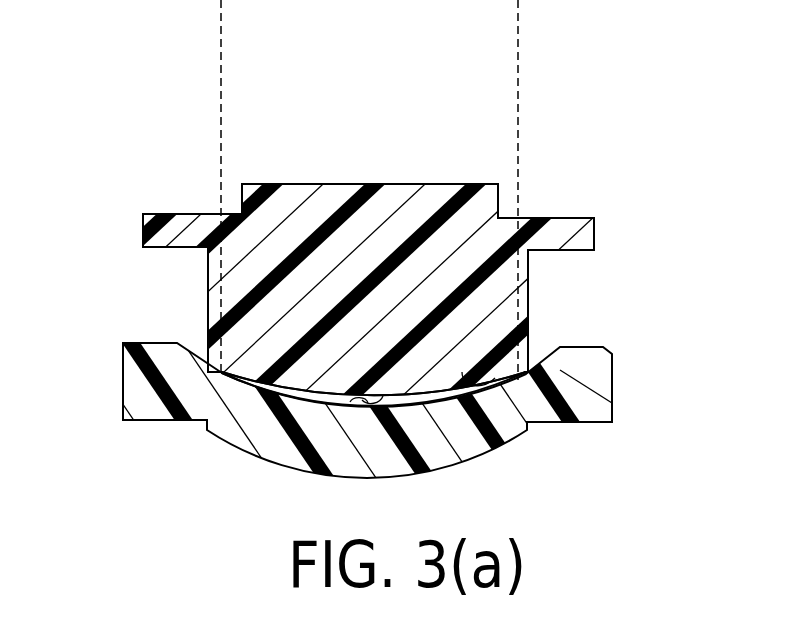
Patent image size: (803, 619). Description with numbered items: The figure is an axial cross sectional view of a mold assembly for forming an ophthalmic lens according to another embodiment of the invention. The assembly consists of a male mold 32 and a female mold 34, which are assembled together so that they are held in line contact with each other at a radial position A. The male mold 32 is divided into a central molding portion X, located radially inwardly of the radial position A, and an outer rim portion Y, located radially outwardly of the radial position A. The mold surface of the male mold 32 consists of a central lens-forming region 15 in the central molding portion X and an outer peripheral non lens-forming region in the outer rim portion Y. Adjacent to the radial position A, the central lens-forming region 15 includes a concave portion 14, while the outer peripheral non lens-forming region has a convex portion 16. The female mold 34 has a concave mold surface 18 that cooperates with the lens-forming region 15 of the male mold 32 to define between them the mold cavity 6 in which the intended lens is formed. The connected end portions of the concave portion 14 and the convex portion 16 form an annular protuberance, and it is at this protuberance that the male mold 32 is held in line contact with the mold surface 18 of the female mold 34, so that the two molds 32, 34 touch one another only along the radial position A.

The male mold 32 is at (558, 180).
The female mold 34 is at (632, 362).
The mold cavity 6 is at (413, 400).
The concave portion 14 is at (462, 372).
The central lens-forming region 15 is at (362, 400).
The convex portion 16 is at (531, 372).
The concave mold surface 18 is at (350, 402).
The radial position A is at (215, 388).
The central molding portion X is at (379, 67).
The outer rim portion Y is at (364, 190).